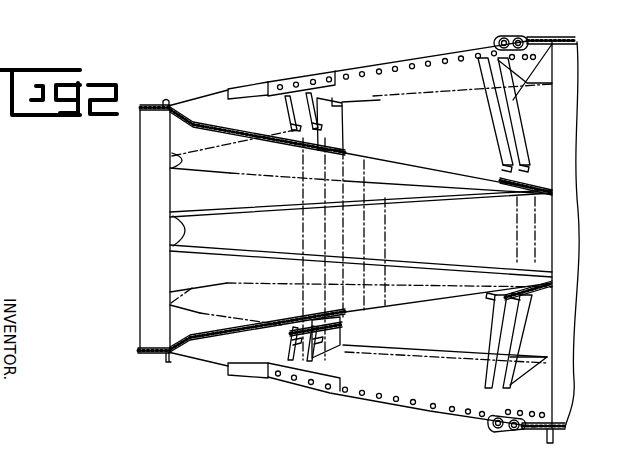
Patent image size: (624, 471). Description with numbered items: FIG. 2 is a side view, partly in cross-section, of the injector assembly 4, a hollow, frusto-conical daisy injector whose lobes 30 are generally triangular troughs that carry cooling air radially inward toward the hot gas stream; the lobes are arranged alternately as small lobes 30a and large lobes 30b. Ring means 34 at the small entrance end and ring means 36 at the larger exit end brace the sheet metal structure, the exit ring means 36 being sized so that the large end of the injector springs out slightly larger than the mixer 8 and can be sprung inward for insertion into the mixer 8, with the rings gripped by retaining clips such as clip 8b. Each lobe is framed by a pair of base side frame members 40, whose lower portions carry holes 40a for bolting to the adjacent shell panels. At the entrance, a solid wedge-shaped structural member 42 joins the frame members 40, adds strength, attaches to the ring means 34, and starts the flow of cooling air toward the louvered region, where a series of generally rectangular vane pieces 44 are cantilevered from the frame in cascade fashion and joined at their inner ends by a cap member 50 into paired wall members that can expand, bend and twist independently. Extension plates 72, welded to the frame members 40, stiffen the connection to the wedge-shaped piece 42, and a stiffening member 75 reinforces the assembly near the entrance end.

The injector assembly 4 is at (414, 244).
The mixer 8 is at (550, 40).
The ring members 8b is at (521, 35).
The lobes 30 is at (437, 146).
The small lobes 30a is at (455, 176).
The large lobes 30b is at (459, 292).
The ring means 34 is at (150, 353).
The ring means 36 is at (497, 34).
The base side frame members 40 is at (390, 72).
The inside surface of frame member 40a is at (368, 72).
The solid structural member 42 is at (231, 289).
The rectangular pieces 44 is at (343, 122).
The cap member 50 is at (545, 198).
The extension plates 72 is at (297, 81).
The stiffening member 75 is at (165, 356).